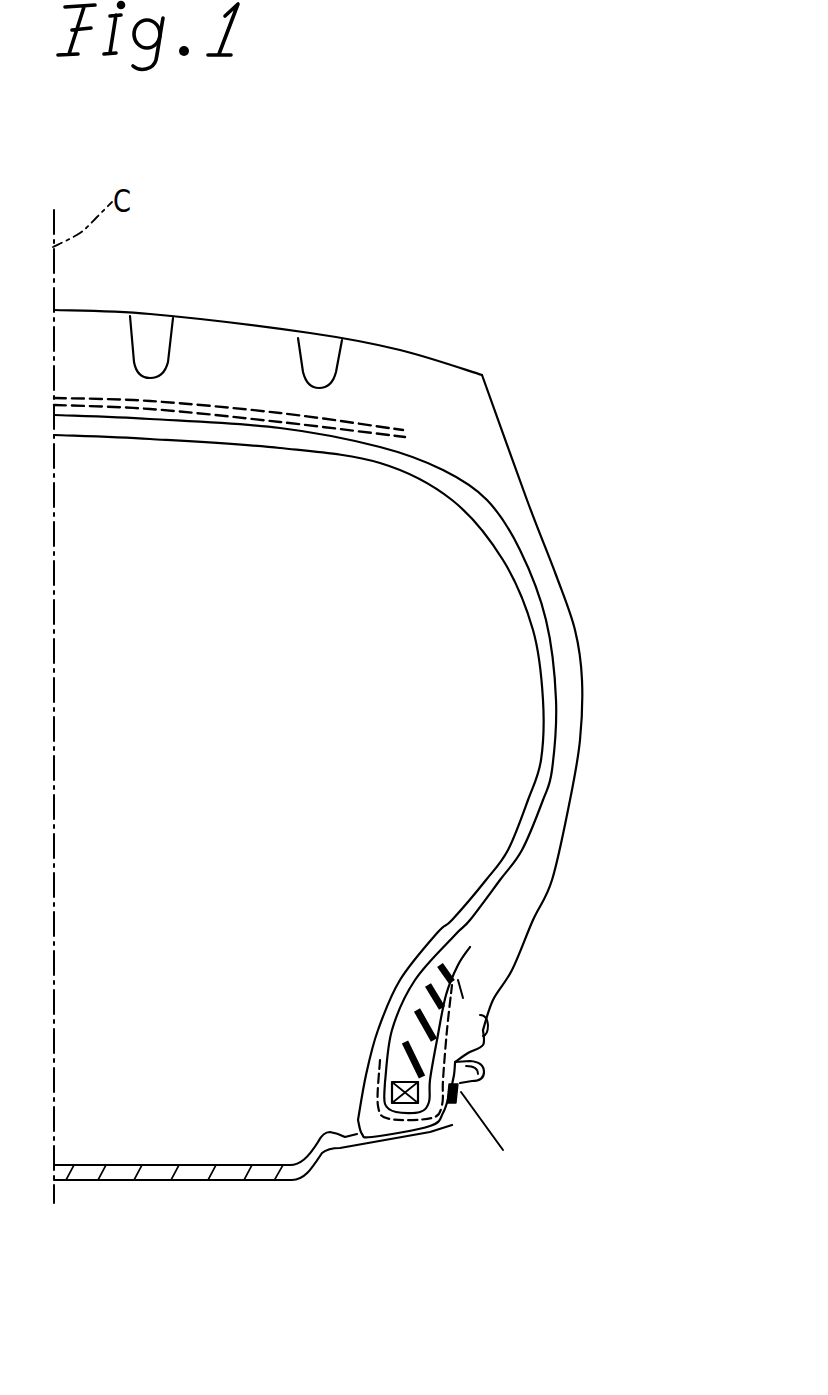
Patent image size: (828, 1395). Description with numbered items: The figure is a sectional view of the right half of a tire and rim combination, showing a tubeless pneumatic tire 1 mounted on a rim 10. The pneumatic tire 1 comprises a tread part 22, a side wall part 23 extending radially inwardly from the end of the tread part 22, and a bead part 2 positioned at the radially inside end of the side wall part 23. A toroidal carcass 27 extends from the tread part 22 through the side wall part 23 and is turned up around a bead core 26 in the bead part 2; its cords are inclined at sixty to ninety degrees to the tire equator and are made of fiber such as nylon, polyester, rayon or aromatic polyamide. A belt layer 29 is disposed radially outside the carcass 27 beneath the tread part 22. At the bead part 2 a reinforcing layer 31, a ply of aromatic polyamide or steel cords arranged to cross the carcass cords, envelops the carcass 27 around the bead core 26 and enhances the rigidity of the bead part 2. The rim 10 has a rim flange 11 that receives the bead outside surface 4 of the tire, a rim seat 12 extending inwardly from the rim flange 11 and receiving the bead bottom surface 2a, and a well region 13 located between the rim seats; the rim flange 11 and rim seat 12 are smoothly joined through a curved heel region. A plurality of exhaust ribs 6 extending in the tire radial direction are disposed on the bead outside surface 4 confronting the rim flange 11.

The pneumatic tire 1 is at (535, 360).
The bead part 2 is at (348, 1080).
The bead bottom surface 2a is at (379, 1150).
The bead outside surface 4 is at (503, 1150).
The exhaust rib 6 is at (490, 1035).
The rim 10 is at (176, 1181).
The rim flange 11 is at (457, 1091).
The rim seat 12 is at (352, 1145).
The well region 13 is at (222, 1180).
The tread part 22 is at (242, 283).
The side wall part 23 is at (605, 725).
The bead core 26 is at (392, 1087).
The carcass 27 is at (555, 700).
The belt layer 29 is at (347, 432).
The reinforcing layer 31 is at (404, 1120).